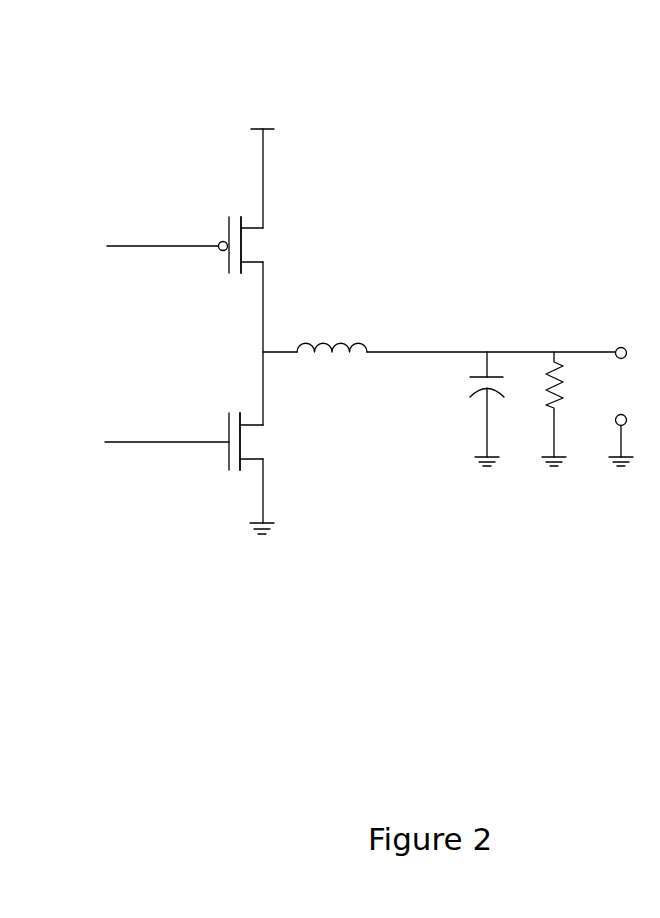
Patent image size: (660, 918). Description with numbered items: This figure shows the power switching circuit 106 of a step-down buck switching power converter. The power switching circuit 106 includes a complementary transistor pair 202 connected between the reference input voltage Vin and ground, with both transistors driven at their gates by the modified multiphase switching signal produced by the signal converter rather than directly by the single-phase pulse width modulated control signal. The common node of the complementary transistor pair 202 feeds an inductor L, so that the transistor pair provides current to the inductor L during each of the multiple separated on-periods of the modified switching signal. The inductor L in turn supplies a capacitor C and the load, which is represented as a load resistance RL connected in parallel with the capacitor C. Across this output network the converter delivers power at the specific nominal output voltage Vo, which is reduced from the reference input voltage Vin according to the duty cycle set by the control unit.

The power switching circuit 106 is at (76, 82).
The complementary transistor pair 202 is at (150, 331).
The reference input voltage Vin is at (262, 165).
The inductor L is at (315, 335).
The capacitor C is at (476, 409).
The load resistance RL is at (542, 409).
The nominal output voltage Vo is at (631, 407).